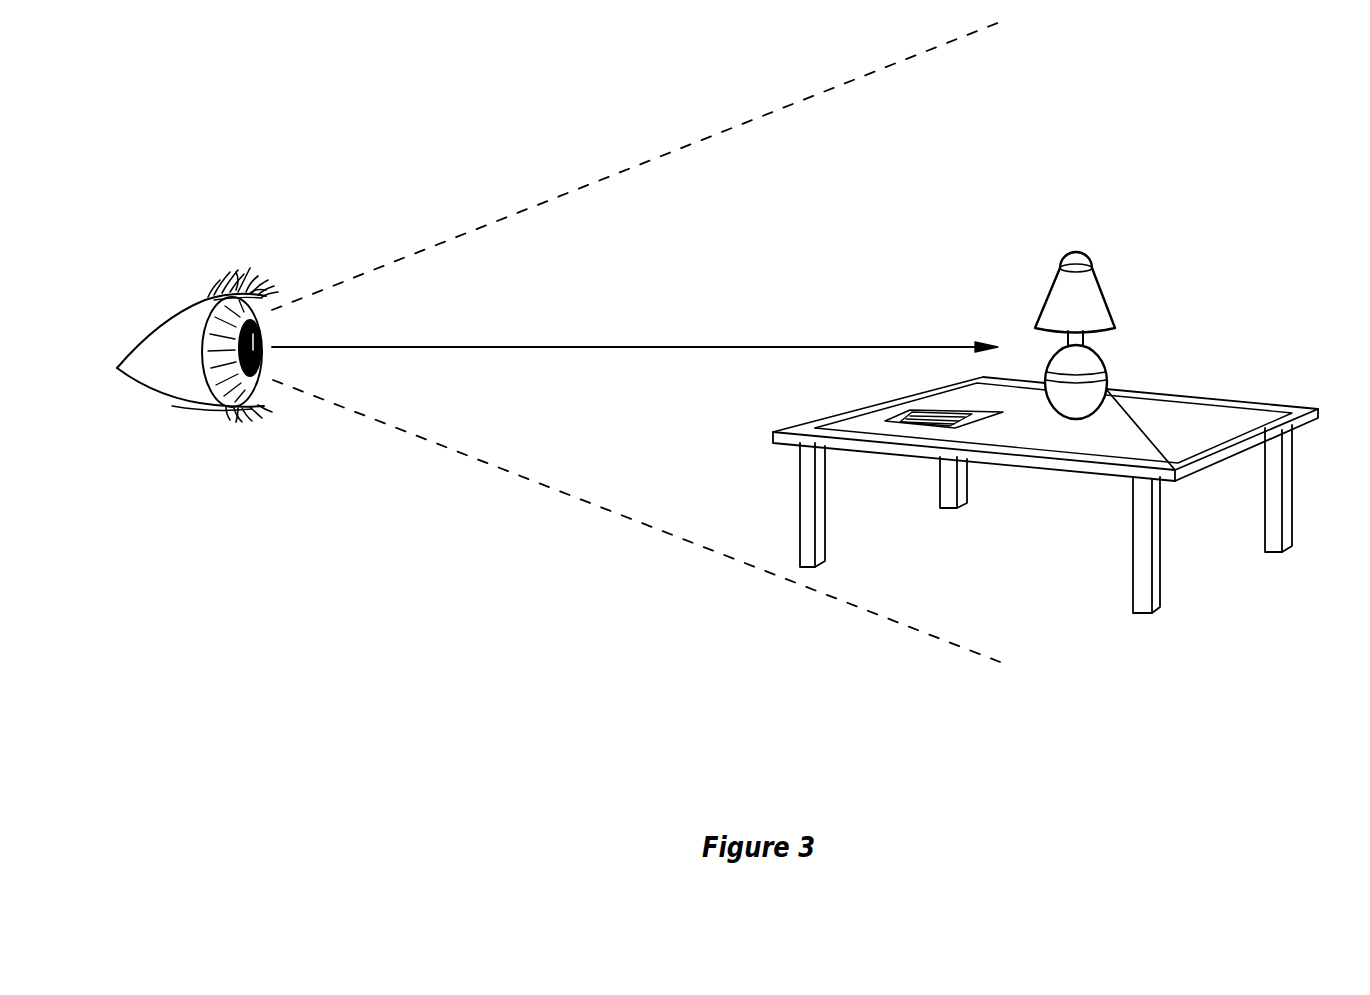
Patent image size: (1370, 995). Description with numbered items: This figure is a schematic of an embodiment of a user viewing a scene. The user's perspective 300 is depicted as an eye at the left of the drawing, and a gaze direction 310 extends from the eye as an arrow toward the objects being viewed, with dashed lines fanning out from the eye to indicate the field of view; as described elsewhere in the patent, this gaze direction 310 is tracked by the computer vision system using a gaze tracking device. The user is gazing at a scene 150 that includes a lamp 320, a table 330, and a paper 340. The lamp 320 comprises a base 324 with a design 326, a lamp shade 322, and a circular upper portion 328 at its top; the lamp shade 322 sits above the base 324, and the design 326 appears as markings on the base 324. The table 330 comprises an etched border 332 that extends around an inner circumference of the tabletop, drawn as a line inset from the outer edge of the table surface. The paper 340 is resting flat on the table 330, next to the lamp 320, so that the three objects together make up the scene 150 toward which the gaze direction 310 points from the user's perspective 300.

The scene 150 is at (990, 222).
The user's perspective 300 is at (174, 274).
The gaze direction 310 is at (632, 346).
The lamp 320 is at (1110, 276).
The lamp shade 322 is at (1100, 314).
The base 324 is at (1102, 360).
The design 326 is at (1094, 398).
The circular upper portion 328 is at (1078, 249).
The table 330 is at (1160, 412).
The etched border 332 is at (1228, 406).
The paper 340 is at (910, 418).